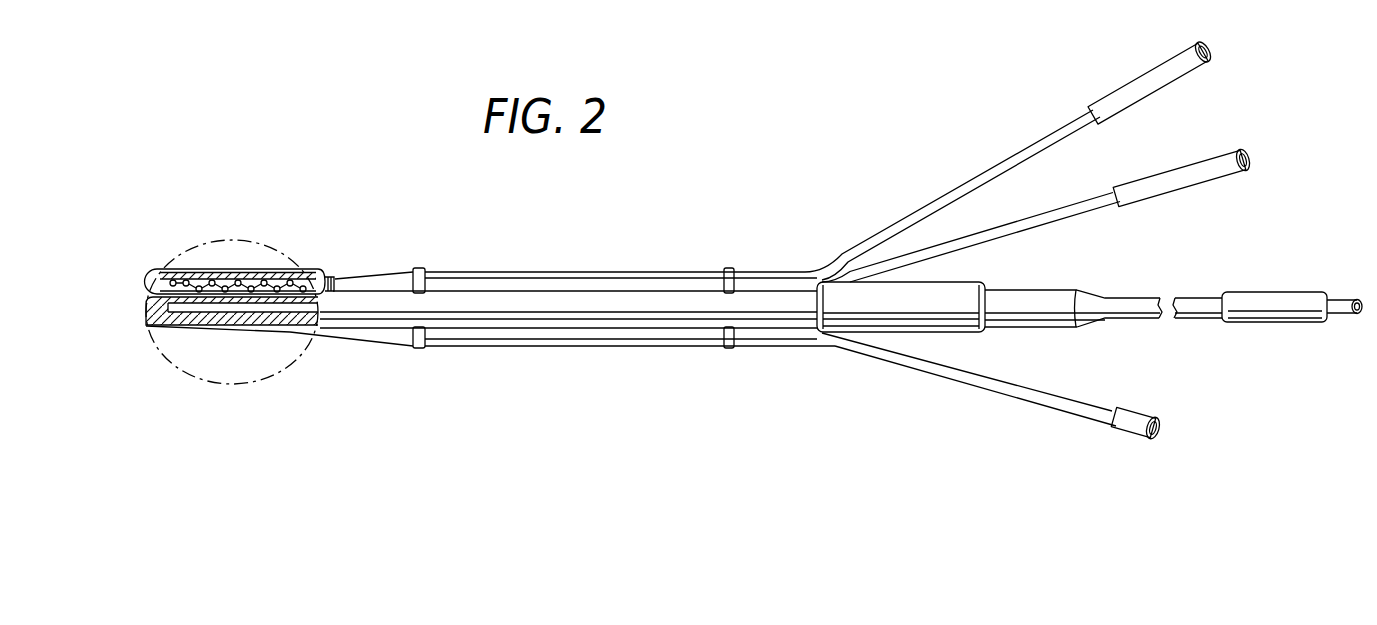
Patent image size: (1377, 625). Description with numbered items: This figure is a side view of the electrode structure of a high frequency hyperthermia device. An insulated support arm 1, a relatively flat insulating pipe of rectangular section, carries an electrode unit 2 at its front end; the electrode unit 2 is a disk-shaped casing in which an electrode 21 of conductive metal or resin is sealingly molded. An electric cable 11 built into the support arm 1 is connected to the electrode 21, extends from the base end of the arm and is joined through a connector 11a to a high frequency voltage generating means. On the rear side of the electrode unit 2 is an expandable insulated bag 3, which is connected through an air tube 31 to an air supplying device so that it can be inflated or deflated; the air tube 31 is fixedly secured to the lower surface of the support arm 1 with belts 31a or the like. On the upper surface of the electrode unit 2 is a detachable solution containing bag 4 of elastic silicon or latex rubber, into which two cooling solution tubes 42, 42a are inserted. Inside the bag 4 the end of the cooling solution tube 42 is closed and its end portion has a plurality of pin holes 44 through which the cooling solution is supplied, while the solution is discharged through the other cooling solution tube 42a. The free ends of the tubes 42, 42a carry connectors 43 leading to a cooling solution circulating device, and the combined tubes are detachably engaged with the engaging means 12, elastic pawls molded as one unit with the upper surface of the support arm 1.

The insulated support arm 1 is at (585, 320).
The electrode unit 2 is at (144, 312).
The insulated bag 3 is at (263, 333).
The solution containing bag 4 is at (180, 269).
The electric cable 11 is at (1132, 300).
The connector 11a is at (1282, 297).
The engaging means 12 is at (420, 268).
The electrode 21 is at (190, 310).
The air tube 31 is at (1000, 382).
The belts 31a is at (418, 348).
The cooling solution tube 42 is at (1015, 157).
The cooling solution tube 42a is at (1052, 210).
The connectors 43 is at (1138, 82).
The pin holes 44 is at (200, 271).